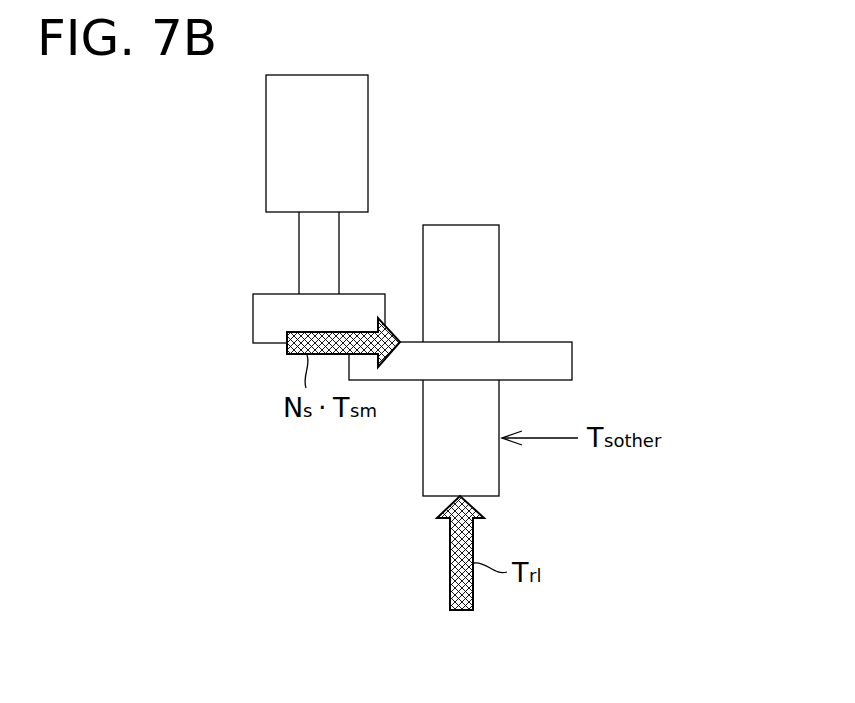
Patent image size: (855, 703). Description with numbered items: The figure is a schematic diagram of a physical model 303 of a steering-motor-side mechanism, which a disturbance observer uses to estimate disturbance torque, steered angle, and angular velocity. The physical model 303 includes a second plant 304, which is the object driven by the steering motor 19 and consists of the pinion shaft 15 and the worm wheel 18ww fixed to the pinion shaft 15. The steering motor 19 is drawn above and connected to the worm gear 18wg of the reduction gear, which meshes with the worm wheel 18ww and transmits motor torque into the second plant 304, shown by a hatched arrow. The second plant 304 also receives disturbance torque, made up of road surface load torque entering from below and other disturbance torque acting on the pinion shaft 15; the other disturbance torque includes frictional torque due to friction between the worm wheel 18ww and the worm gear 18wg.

The steering motor 19 is at (266, 142).
The worm gear 18wg is at (253, 318).
The pinion shaft 15 is at (499, 253).
The worm wheel 18ww is at (547, 342).
The second plant 304 is at (597, 228).
The physical model of steering-motor-side mechanism 303 is at (490, 665).